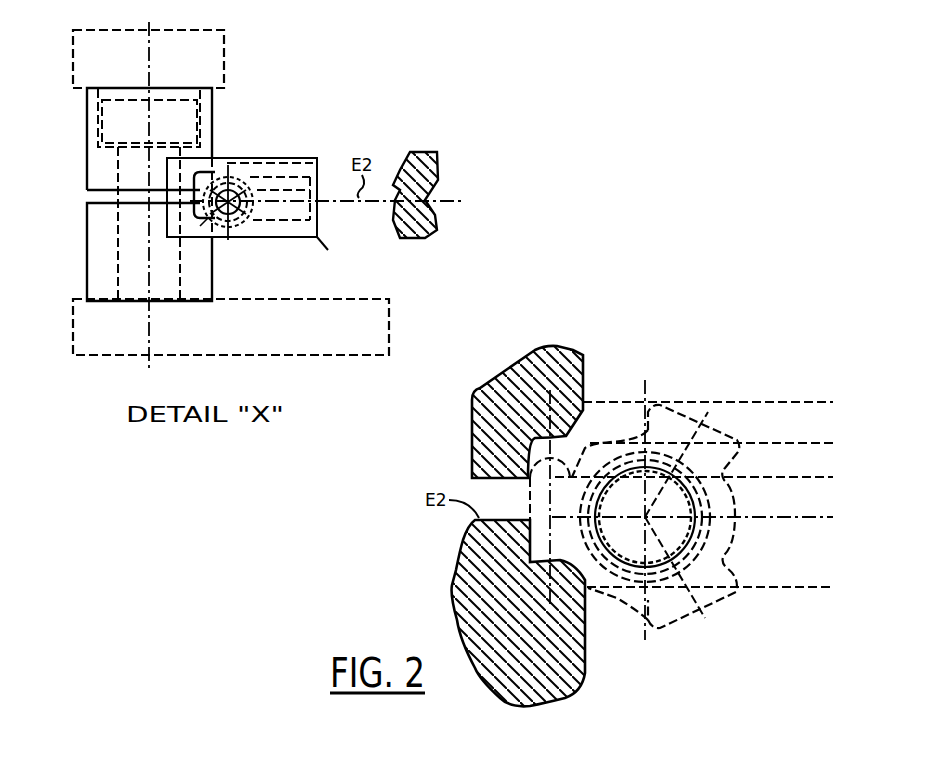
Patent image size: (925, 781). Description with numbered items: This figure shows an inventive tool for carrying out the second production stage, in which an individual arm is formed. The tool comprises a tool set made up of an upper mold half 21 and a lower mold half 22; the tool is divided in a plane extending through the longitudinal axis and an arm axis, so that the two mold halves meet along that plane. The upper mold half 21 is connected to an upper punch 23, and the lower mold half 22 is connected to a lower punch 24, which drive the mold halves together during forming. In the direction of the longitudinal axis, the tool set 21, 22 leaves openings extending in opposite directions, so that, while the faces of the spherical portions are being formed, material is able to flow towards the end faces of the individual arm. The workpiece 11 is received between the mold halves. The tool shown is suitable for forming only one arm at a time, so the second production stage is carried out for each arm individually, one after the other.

The bearing unit / spherical bearing assembly 11 is at (286, 145).
The upper mold half 21 is at (70, 150).
The lower mold half 22 is at (70, 254).
The upper punch 23 is at (225, 70).
The lower punch 24 is at (387, 332).